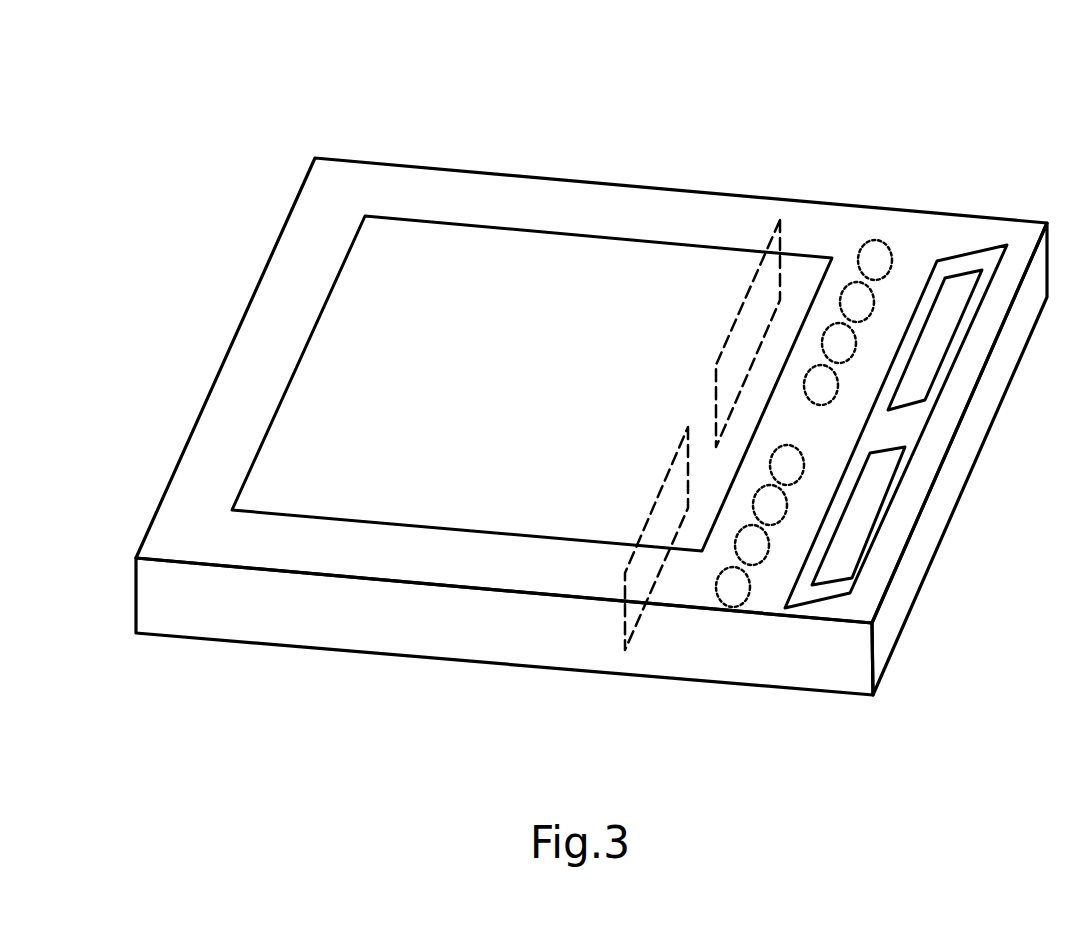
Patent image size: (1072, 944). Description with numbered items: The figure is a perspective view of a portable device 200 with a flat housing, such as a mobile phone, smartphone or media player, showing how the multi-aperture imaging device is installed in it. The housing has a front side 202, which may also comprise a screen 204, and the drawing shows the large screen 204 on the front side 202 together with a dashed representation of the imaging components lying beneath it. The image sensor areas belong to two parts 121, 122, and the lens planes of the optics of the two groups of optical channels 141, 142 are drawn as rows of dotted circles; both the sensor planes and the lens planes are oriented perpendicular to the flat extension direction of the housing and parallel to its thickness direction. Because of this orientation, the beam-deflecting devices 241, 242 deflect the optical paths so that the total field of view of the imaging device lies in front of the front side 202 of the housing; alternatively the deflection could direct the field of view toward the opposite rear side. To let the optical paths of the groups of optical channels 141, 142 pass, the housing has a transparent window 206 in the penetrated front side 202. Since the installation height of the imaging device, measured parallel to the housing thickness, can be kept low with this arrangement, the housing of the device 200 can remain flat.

The portable device 200 is at (1043, 54).
The front side 202 is at (293, 263).
The display 204 is at (418, 218).
The transparent window 206 is at (930, 430).
The beam-deflecting device 241 is at (875, 513).
The beam-deflecting device 242 is at (947, 352).
The image sensor part 121 is at (663, 521).
The image sensor part 122 is at (762, 299).
The group of optical channels 141 is at (726, 634).
The group of optical channels 142 is at (890, 229).